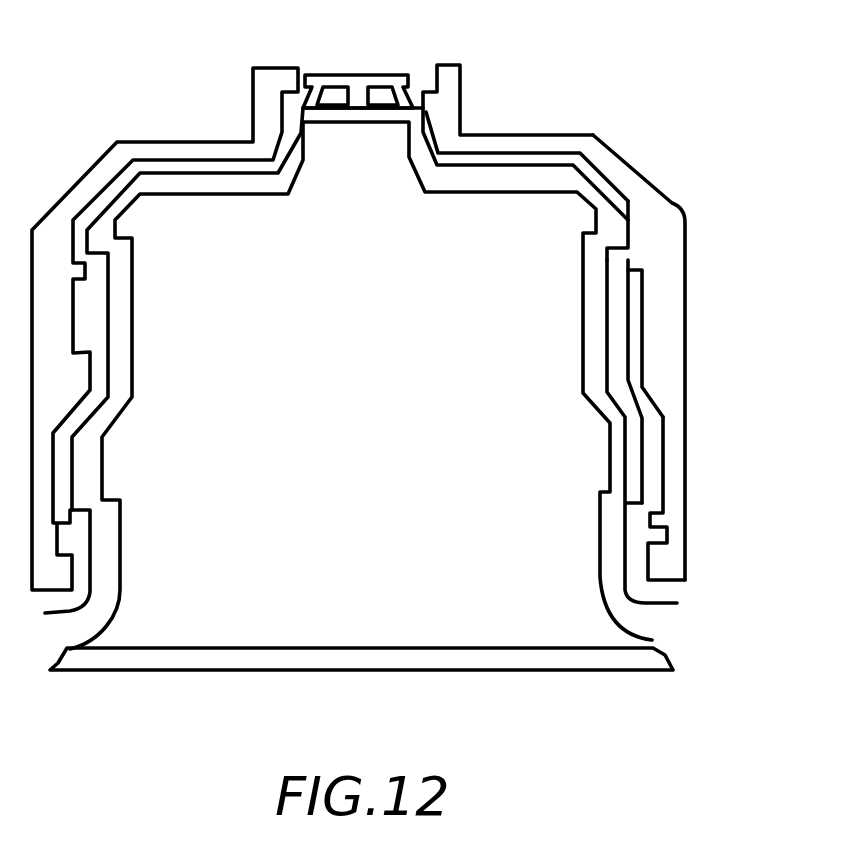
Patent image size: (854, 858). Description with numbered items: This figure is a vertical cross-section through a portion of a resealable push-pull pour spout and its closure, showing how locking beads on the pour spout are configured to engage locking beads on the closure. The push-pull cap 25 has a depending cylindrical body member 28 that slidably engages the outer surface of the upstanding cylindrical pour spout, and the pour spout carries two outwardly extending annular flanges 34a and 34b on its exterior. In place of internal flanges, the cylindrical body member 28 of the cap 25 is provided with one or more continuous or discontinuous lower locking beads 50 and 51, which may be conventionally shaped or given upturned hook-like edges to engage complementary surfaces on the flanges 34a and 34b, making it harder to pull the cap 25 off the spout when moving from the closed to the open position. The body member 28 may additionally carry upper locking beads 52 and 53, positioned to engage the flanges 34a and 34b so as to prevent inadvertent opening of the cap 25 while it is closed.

The push-pull cap 25 is at (462, 66).
The outwardly extending annular flange 34b is at (615, 222).
The upper locking bead 52 is at (636, 257).
The lower locking bead 51 is at (636, 347).
The cylindrical body member 28 is at (668, 384).
The outwardly extending annular flange 34a is at (636, 452).
The upper locking bead 53 is at (646, 509).
The lower locking bead 50 is at (660, 553).